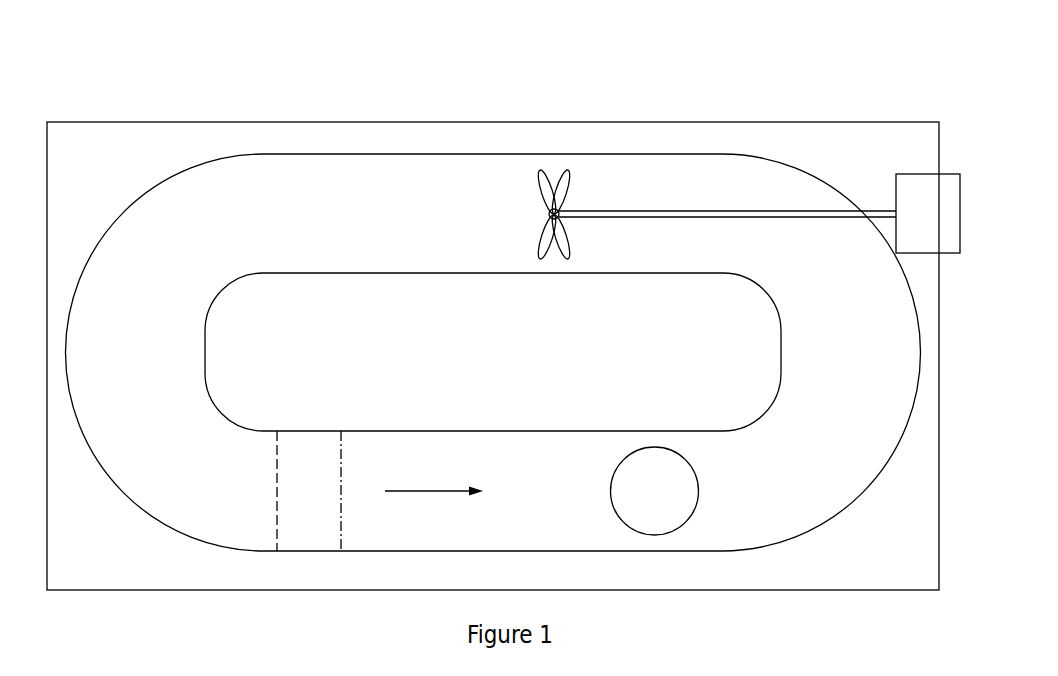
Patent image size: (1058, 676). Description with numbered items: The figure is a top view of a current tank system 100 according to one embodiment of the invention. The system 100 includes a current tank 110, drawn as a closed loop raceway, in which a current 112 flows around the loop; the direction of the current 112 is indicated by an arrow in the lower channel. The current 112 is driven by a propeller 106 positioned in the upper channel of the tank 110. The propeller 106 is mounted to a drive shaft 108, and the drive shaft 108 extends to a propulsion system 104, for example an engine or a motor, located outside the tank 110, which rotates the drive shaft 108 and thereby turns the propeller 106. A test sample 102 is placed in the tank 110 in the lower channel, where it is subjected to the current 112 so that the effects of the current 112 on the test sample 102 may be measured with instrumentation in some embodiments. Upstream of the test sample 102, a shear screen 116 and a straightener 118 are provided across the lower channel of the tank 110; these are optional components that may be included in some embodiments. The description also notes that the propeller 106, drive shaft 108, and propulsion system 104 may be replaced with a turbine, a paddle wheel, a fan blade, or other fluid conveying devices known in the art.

The system 100 is at (748, 109).
The test sample 102 is at (669, 499).
The propulsion system 104 is at (915, 174).
The propeller 106 is at (538, 185).
The drive shaft 108 is at (673, 210).
The current tank 110 is at (347, 221).
The current 112 is at (434, 484).
The shear screen 116 is at (277, 489).
The straightener 118 is at (341, 483).